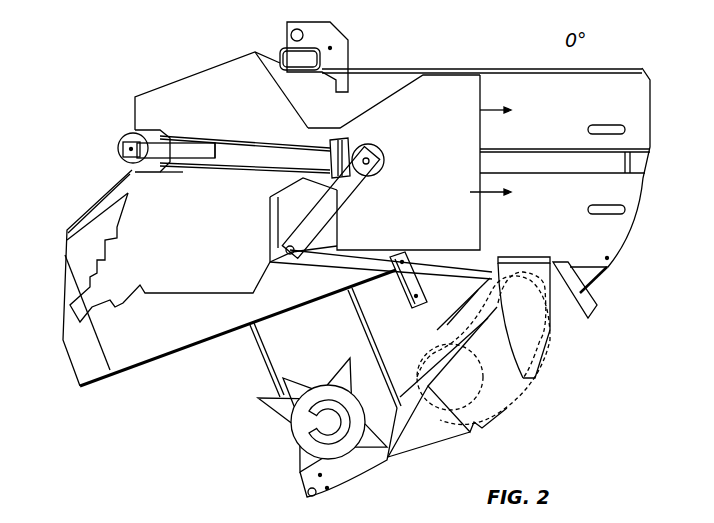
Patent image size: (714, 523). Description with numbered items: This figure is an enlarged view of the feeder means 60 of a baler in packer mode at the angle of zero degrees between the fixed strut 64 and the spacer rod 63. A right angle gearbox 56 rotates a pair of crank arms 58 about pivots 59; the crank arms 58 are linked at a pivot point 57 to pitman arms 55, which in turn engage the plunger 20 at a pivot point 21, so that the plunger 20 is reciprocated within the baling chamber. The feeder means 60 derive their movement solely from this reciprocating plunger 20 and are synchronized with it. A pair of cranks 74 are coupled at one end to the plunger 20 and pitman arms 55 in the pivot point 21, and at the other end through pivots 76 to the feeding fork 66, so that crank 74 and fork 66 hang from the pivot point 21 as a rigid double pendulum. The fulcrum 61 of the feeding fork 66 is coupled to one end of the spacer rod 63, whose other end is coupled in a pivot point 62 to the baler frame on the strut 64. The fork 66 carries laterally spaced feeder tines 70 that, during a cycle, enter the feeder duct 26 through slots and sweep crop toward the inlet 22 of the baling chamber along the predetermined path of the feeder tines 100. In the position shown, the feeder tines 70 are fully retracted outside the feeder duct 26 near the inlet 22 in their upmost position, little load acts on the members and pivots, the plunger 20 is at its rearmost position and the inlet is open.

The plunger 20 is at (462, 171).
The pivot point 21 is at (370, 157).
The inlet of the baling chamber 22 is at (528, 257).
The feeder duct 26 is at (483, 410).
The pitman arms 55 is at (263, 163).
The right angle gearbox 56 is at (265, 100).
The pivot point 57 is at (128, 147).
The crank arms 58 is at (183, 173).
The pivots 59 is at (207, 160).
The feeder means 60 is at (300, 272).
The fulcrum 61 is at (415, 258).
The pivot point 62 is at (418, 298).
The spacer rod 63 is at (337, 297).
The strut 64 is at (435, 290).
The feeding fork 66 is at (307, 297).
The feeder tines 70 is at (455, 270).
The cranks 74 is at (348, 198).
The pivots 76 is at (270, 259).
The path of the feeder tines 100 is at (500, 395).